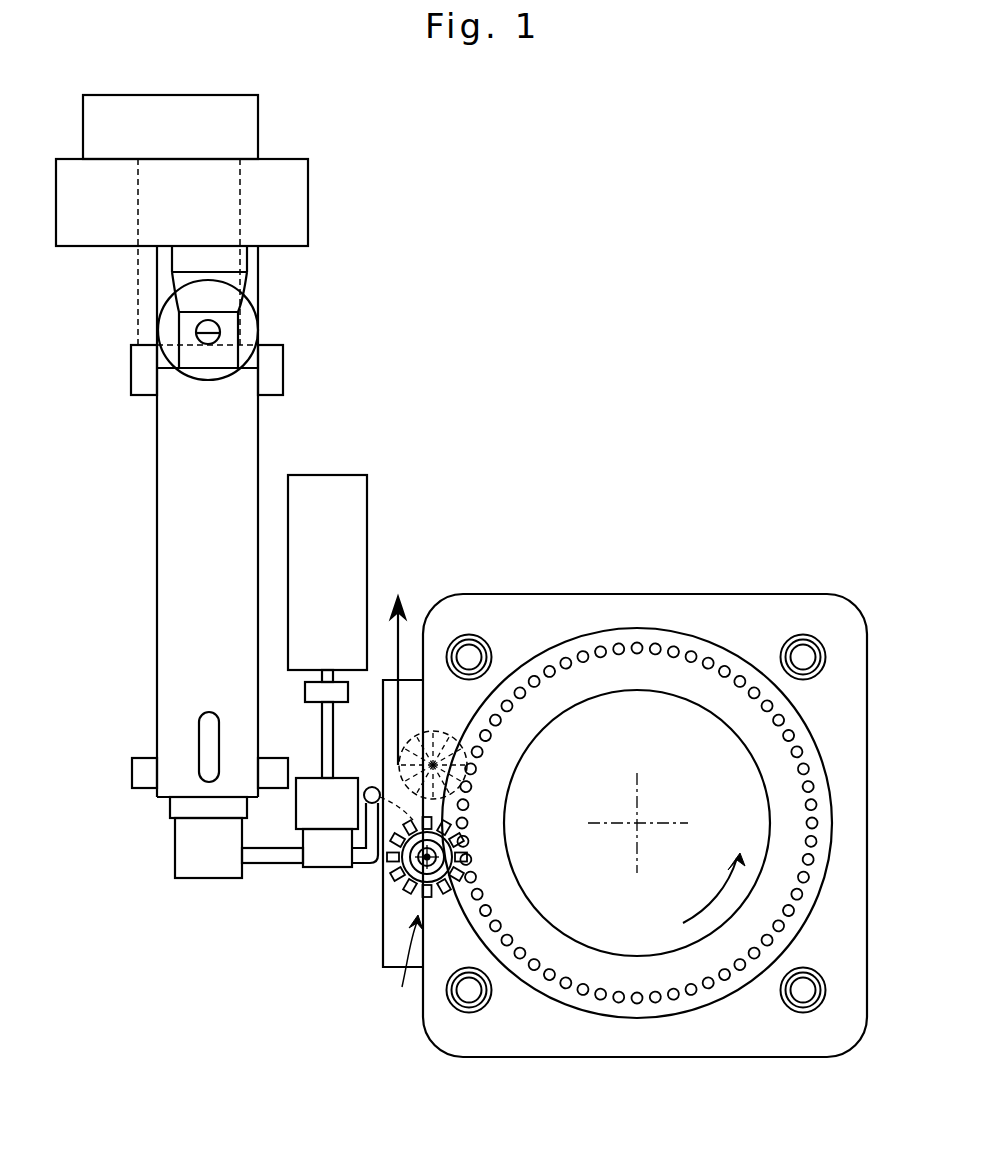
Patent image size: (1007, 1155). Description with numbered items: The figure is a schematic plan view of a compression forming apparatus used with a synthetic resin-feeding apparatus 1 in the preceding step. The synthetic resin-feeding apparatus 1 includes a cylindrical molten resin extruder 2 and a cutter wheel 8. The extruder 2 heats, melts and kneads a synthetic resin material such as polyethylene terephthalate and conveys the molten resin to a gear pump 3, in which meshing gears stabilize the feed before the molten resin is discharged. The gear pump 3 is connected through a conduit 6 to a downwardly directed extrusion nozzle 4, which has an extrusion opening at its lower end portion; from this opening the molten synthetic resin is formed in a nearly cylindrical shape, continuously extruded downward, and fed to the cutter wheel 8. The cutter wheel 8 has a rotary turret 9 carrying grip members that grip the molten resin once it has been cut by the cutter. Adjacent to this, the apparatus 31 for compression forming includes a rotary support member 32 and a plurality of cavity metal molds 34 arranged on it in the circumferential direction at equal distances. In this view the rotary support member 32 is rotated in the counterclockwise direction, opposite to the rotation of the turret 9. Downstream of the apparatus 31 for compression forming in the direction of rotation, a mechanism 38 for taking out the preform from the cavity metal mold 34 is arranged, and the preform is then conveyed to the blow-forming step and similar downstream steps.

The synthetic resin-feeding apparatus 1 is at (118, 533).
The cylindrical molten resin extruder 2 is at (170, 595).
The gear pump 3 is at (320, 862).
The extrusion nozzle 4 is at (377, 785).
The conduit 6 is at (367, 860).
The cutter wheel 8 is at (405, 963).
The rotary turret 9 is at (410, 893).
The apparatus for compression forming 31 is at (745, 635).
The rotary support member 32 is at (657, 628).
The cavity metal molds 34 is at (470, 817).
The mechanism for taking out the preform 38 is at (432, 730).